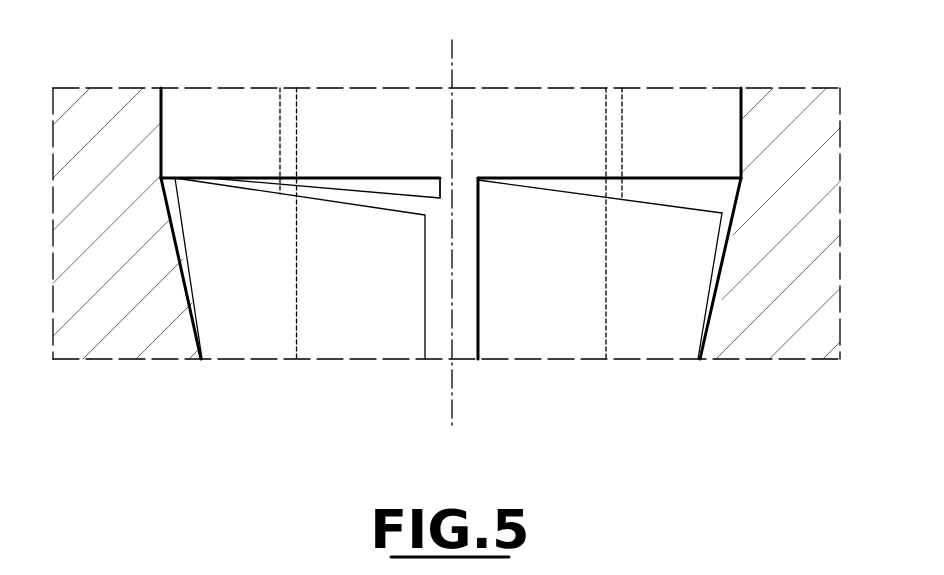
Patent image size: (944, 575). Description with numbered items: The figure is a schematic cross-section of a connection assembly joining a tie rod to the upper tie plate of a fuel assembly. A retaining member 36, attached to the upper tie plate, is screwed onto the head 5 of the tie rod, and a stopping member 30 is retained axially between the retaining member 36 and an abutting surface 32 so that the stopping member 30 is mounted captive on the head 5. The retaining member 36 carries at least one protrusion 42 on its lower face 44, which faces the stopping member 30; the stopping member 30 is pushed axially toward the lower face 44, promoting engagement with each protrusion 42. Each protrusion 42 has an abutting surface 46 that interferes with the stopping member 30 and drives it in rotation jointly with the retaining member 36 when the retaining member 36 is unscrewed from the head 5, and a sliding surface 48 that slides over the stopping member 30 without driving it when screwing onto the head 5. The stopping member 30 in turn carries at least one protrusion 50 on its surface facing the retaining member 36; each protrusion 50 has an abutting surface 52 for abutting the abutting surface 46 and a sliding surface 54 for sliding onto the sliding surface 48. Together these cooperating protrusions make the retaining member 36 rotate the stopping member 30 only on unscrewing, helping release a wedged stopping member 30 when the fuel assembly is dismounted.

The head 5 is at (800, 102).
The stopping member 30 is at (243, 345).
The abutting surface 32 is at (172, 233).
The retaining member 36 is at (195, 115).
The protrusion 42 is at (418, 183).
The lower face 44 is at (697, 183).
The abutting surface 46 is at (442, 188).
The sliding surface 48 is at (362, 186).
The protrusion 50 is at (570, 217).
The abutting surface 52 is at (478, 181).
The sliding surface 54 is at (542, 188).